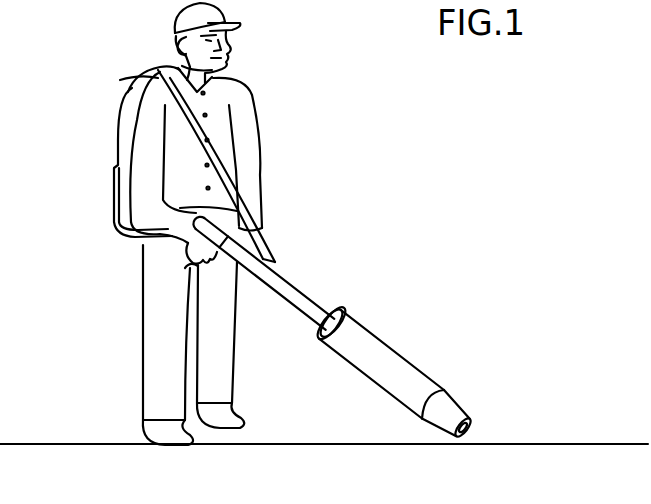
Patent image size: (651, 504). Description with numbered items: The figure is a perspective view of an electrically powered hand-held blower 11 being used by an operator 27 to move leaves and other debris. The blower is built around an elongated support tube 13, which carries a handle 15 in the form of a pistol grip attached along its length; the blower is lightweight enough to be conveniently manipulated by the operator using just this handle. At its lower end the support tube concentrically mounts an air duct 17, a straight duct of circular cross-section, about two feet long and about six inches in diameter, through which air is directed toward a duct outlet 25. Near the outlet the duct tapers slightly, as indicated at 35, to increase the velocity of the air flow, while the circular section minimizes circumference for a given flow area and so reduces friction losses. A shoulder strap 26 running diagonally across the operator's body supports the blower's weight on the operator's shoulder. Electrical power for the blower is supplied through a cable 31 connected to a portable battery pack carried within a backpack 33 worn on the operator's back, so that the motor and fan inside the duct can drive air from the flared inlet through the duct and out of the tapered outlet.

The electrically powered hand-held blower 11 is at (440, 256).
The elongated support tube 13 is at (290, 287).
The handle 15 is at (220, 263).
The air duct 17 is at (398, 362).
The duct outlet 25 is at (472, 428).
The shoulder strap 26 is at (262, 228).
The operator 27 is at (250, 80).
The cable 31 is at (118, 234).
The backpack 33 is at (136, 90).
The tapered outlet portion 35 is at (443, 393).